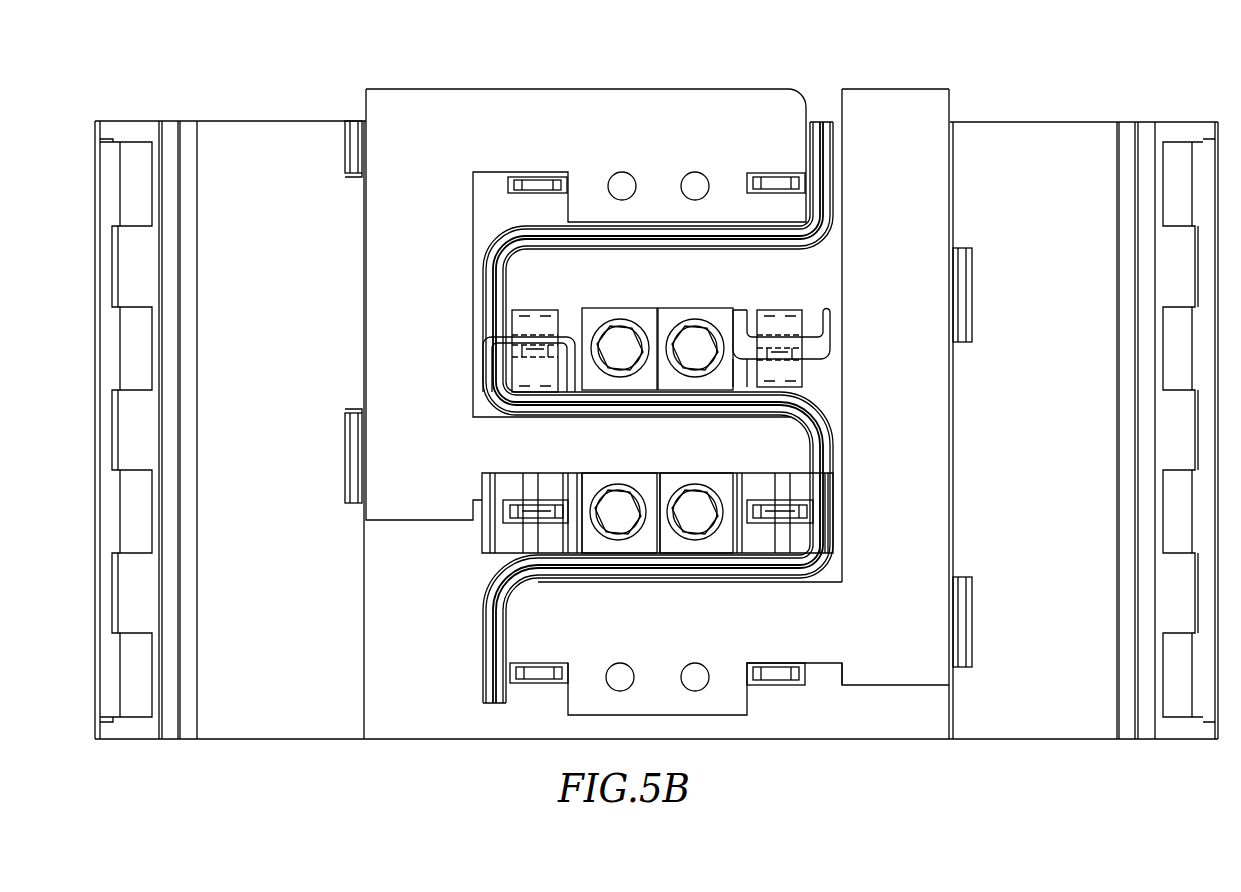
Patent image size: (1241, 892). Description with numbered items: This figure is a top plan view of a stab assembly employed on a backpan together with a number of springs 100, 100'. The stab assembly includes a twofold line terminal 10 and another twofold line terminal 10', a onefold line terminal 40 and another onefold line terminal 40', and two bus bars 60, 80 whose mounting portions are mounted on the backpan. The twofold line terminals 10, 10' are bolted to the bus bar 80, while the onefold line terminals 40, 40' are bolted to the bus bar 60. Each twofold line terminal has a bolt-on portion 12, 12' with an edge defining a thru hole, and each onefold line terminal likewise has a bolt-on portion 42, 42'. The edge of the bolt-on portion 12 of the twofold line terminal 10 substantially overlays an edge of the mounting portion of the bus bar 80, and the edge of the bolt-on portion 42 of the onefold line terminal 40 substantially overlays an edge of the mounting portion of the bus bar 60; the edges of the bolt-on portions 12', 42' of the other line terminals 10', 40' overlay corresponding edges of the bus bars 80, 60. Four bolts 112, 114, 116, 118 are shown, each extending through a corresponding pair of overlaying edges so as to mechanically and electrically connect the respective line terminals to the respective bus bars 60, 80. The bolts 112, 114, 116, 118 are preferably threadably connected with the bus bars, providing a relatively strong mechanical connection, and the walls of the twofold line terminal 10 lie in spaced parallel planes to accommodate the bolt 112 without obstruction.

The bus bar 60 is at (467, 115).
The bus bar 80 is at (938, 106).
The spring 100 is at (521, 298).
The spring 100' is at (835, 308).
The twofold line terminal 10 is at (487, 354).
The twofold line terminal 10' is at (830, 337).
The bolt-on portion 12 is at (619, 327).
The bolt-on portion 12' is at (704, 327).
The bolt 112 is at (623, 372).
The bolt 114 is at (689, 374).
The bolt 116 is at (606, 496).
The bolt 118 is at (720, 532).
The onefold line terminal 40 is at (544, 534).
The onefold line terminal 40' is at (783, 489).
The bolt-on portion 42 is at (619, 545).
The bolt-on portion 42' is at (698, 545).